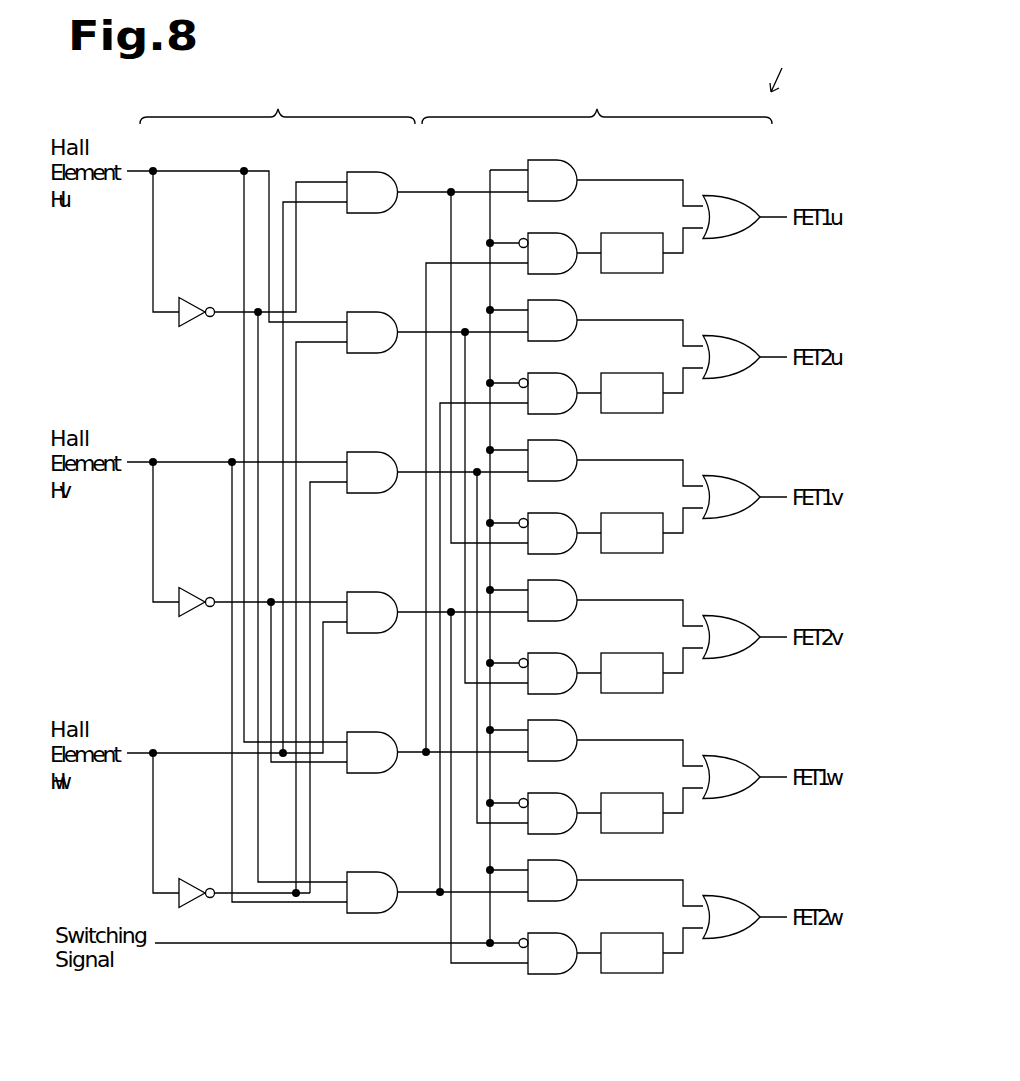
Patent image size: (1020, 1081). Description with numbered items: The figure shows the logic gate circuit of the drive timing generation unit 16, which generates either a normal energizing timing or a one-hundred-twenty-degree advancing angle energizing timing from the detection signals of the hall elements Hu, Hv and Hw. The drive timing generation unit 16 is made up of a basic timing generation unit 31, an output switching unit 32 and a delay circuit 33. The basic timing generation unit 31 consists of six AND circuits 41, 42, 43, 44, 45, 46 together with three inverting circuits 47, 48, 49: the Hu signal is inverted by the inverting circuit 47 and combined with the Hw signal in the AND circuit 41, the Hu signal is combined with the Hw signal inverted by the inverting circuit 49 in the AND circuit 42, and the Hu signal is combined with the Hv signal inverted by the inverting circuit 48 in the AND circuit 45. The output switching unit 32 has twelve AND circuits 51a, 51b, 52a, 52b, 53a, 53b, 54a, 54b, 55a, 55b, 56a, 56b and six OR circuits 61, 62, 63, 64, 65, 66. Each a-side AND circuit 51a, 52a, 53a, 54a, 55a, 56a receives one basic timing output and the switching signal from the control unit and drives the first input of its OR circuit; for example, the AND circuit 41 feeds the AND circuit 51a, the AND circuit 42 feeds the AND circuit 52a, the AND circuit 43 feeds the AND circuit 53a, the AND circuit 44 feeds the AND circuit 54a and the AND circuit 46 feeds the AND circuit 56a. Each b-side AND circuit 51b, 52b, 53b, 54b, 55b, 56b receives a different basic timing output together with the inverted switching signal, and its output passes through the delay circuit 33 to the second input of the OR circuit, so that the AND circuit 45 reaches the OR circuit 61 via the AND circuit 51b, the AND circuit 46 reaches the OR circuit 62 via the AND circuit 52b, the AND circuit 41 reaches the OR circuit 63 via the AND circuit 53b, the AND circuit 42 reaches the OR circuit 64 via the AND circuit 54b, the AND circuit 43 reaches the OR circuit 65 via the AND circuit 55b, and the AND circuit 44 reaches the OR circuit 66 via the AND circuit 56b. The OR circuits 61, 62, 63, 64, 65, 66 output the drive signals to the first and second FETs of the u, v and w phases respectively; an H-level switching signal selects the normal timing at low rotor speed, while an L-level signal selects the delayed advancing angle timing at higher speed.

The drive timing generation unit 16 is at (789, 65).
The basic timing generation unit 31 is at (277, 101).
The output switching unit 32 is at (597, 101).
The delay circuit 33 is at (643, 918).
The AND circuit 41 is at (356, 171).
The AND circuit 42 is at (356, 311).
The AND circuit 43 is at (356, 451).
The AND circuit 44 is at (356, 591).
The AND circuit 45 is at (356, 731).
The AND circuit 46 is at (356, 871).
The inverting circuit 47 is at (187, 297).
The inverting circuit 48 is at (187, 587).
The inverting circuit 49 is at (187, 878).
The AND circuit 51a is at (536, 159).
The AND circuit 51b is at (536, 232).
The AND circuit 52a is at (536, 299).
The AND circuit 52b is at (536, 372).
The AND circuit 53a is at (536, 439).
The AND circuit 53b is at (536, 512).
The AND circuit 54a is at (536, 579).
The AND circuit 54b is at (536, 652).
The AND circuit 55a is at (536, 719).
The AND circuit 55b is at (536, 792).
The AND circuit 56a is at (536, 859).
The AND circuit 56b is at (536, 932).
The OR circuit 61 is at (714, 194).
The OR circuit 62 is at (714, 334).
The OR circuit 63 is at (714, 474).
The OR circuit 64 is at (714, 614).
The OR circuit 65 is at (714, 754).
The OR circuit 66 is at (714, 894).